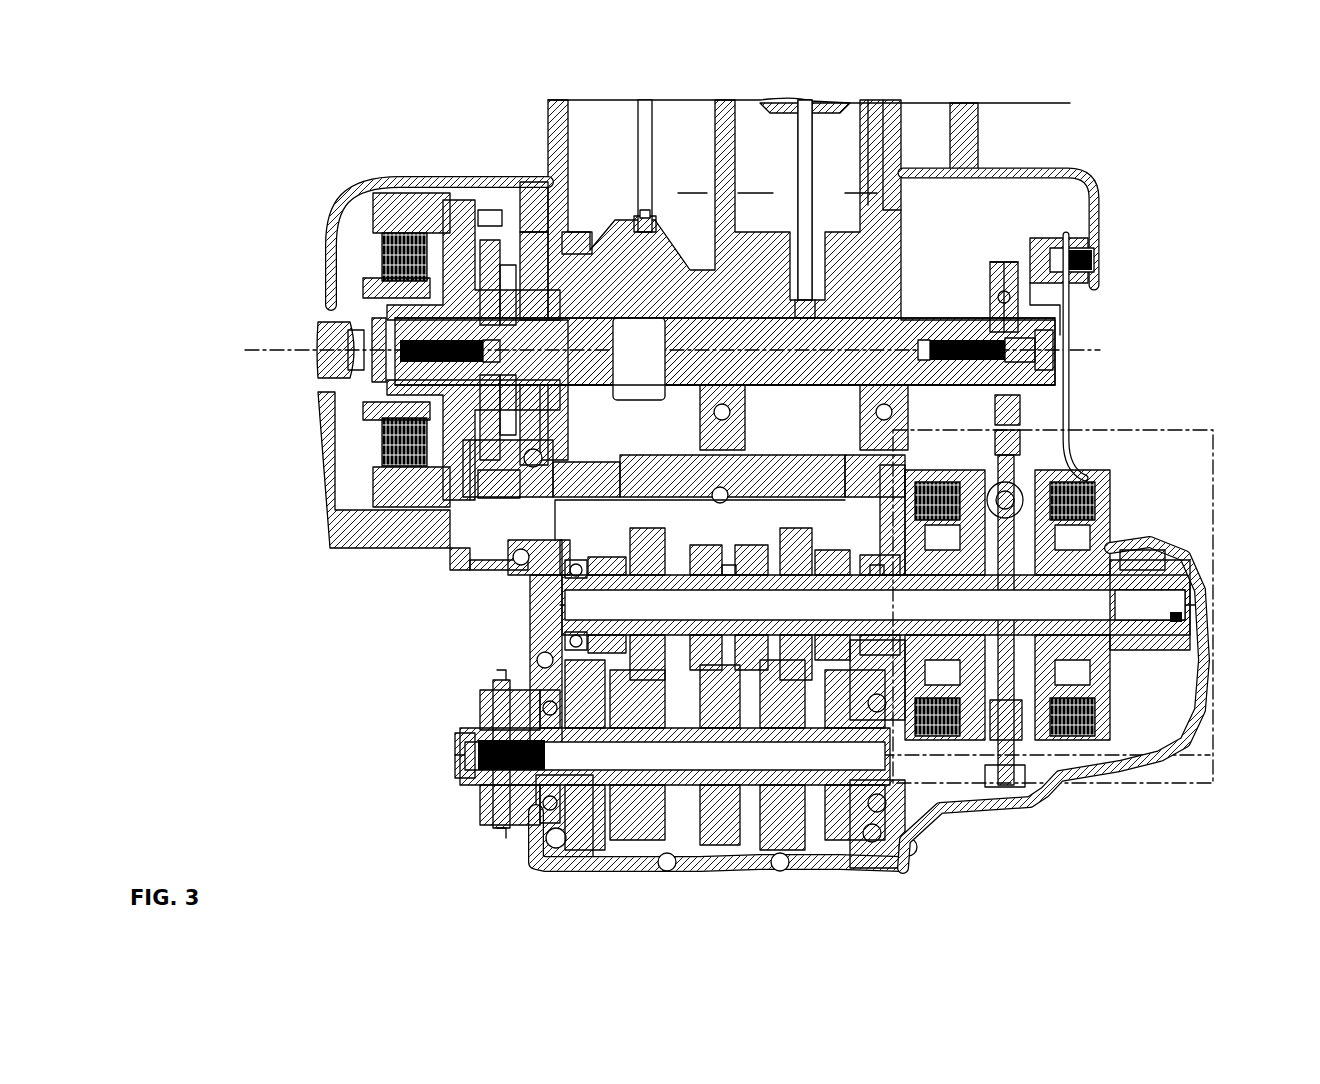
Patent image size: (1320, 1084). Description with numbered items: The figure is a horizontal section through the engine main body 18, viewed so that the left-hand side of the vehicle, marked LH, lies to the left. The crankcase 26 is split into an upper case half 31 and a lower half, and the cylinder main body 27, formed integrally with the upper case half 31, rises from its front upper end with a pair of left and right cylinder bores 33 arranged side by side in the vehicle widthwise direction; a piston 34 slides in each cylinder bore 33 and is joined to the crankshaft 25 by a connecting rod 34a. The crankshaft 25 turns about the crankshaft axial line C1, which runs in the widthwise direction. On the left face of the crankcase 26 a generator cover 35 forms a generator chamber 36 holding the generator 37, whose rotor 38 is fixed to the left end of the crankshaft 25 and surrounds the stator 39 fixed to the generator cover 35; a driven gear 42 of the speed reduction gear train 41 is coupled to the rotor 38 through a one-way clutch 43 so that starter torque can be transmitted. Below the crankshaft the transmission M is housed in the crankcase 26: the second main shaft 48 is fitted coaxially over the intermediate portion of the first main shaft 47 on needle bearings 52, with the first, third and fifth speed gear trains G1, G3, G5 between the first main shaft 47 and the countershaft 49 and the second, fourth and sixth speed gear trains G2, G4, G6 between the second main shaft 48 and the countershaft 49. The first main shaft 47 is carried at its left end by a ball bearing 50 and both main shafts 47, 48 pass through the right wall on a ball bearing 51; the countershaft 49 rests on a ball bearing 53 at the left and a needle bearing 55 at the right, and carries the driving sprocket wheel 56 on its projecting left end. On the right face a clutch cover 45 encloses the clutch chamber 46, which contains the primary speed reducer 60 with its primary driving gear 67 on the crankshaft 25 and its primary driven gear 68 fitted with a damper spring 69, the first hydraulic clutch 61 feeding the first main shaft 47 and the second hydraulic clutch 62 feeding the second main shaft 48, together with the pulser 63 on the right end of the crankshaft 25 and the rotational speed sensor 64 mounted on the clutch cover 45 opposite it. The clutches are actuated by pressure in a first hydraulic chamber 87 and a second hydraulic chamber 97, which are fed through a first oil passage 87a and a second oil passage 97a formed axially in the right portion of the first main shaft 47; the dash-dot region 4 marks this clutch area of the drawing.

The gear shift unit 4 is at (1200, 428).
The engine main body 18 is at (492, 580).
The crankshaft 25 is at (678, 368).
The crankcase 26 is at (490, 170).
The cylinder main body 27 is at (553, 122).
The upper case half 31 is at (548, 235).
The cylinder bore 33 is at (722, 146).
The piston 34 is at (836, 108).
The connecting rod 34a is at (653, 162).
The generator cover 35 is at (392, 542).
The generator chamber 36 is at (395, 192).
The generator 37 is at (345, 545).
The rotor 38 is at (422, 200).
The stator 39 is at (383, 195).
The speed reduction gear train 41 is at (520, 190).
The driven gear 42 is at (520, 208).
The one-way clutch 43 is at (488, 500).
The clutch cover 45 is at (1074, 336).
The clutch chamber 46 is at (1030, 210).
The first main shaft 47 is at (614, 578).
The second main shaft 48 is at (818, 590).
The countershaft 49 is at (485, 733).
The ball bearing 50 is at (556, 594).
The ball bearing 51 is at (898, 490).
The needle bearing 52 is at (870, 590).
The ball bearing 53 is at (558, 815).
The needle bearing 55 is at (890, 760).
The driving sprocket wheel 56 is at (490, 800).
The primary speed reducer 60 is at (978, 265).
The first hydraulic clutch 61 is at (1105, 500).
The second hydraulic clutch 62 is at (952, 470).
The pulser 63 is at (1066, 290).
The rotational speed sensor 64 is at (1058, 240).
The primary driving gear 67 is at (996, 296).
The primary driven gear 68 is at (1020, 440).
The damper spring 69 is at (1020, 495).
The first hydraulic chamber 87 is at (1035, 778).
The first oil passage 87a is at (1195, 628).
The second hydraulic chamber 97 is at (958, 728).
The second oil passage 97a is at (1170, 610).
The crankshaft axial line C1 is at (300, 350).
The left hand direction LH is at (300, 350).
The transmission M is at (915, 818).
The first speed gear train G1 is at (598, 557).
The second speed gear train G2 is at (828, 550).
The third speed gear train G3 is at (705, 543).
The fourth speed gear train G4 is at (753, 548).
The fifth speed gear train G5 is at (643, 522).
The sixth speed gear train G6 is at (797, 522).